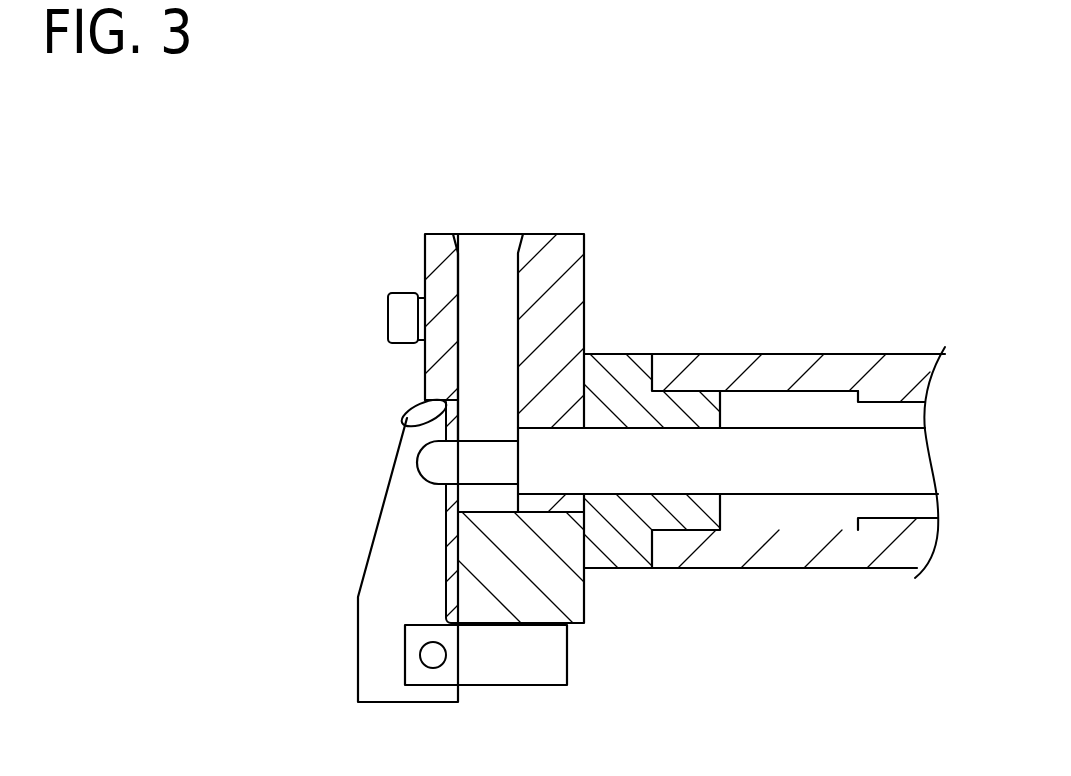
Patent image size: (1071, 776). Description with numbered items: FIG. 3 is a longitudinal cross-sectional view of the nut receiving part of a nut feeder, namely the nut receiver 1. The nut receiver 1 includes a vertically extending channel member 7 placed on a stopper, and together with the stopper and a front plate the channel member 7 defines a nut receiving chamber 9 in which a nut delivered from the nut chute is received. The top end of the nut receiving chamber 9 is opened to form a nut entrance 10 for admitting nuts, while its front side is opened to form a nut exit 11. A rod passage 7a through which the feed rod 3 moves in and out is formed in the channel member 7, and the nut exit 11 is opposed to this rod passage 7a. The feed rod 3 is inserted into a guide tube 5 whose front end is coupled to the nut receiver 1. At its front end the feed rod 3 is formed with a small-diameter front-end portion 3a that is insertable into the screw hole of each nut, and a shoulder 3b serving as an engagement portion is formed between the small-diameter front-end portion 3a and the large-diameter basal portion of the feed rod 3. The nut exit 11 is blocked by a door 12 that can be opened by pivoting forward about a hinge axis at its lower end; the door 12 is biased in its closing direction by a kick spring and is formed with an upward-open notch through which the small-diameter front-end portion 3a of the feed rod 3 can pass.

The nut receiver 1 is at (425, 279).
The feed rod 3 is at (830, 480).
The small-diameter front-end portion 3a is at (430, 463).
The shoulder (engagement portion) 3b is at (518, 430).
The guide tube 5 is at (857, 353).
The channel member 7 is at (587, 273).
The rod passage 7a is at (553, 496).
The nut receiving chamber 9 is at (487, 422).
The nut entrance 10 is at (480, 234).
The nut exit 11 is at (405, 420).
The door 12 is at (440, 516).